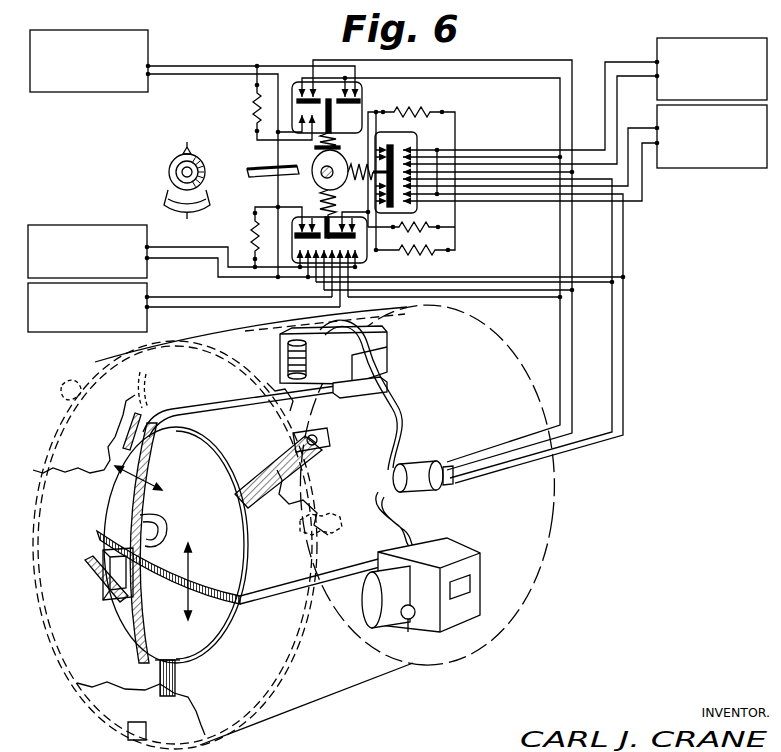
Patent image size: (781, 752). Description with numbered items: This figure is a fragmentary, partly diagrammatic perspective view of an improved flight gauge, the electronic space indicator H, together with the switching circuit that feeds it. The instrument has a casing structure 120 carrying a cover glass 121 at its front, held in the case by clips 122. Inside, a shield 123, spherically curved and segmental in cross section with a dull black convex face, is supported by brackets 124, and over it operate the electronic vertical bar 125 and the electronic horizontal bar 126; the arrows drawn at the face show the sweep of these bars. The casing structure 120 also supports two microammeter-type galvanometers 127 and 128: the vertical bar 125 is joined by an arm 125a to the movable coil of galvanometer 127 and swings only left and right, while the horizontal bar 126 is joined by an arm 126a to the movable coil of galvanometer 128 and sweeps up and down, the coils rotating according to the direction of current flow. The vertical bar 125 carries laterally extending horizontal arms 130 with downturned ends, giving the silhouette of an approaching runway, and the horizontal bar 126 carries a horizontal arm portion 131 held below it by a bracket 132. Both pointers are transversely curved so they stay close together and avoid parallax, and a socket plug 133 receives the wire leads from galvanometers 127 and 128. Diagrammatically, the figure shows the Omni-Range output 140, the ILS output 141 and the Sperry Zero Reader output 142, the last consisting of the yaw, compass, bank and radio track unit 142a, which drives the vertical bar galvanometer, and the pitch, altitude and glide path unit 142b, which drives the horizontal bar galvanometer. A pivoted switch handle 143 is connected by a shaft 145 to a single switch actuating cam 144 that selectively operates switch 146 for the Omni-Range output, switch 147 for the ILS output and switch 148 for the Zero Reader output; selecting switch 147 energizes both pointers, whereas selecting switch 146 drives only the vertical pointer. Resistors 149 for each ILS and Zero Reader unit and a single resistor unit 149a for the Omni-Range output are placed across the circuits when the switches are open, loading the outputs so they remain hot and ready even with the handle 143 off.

The Omni-Range output 140 is at (89, 49).
The ILS output 141 is at (694, 103).
The Sperry Zero Reader output 142 is at (102, 272).
The yaw, compass, bank and radio track unit 142a is at (87, 240).
The pitch, altitude and glide path unit 142b is at (87, 319).
The pivoted switch handle 143 is at (185, 181).
The switch actuating cam 144 is at (332, 175).
The shaft 145 is at (268, 163).
The switch 146 is at (349, 107).
The switch 147 is at (442, 178).
The switch 148 is at (356, 246).
The resistors 149 is at (356, 173).
The resistor unit 149a is at (239, 108).
The casing structure 120 is at (320, 527).
The cover glass 121 is at (160, 383).
The clips 122 is at (186, 457).
The shield 123 is at (179, 545).
The brackets 124 is at (226, 541).
The electronic vertical bar 125 is at (162, 543).
The arm 125a is at (246, 409).
The electronic horizontal bar 126 is at (168, 567).
The arm 126a is at (327, 591).
The galvanometer 127 is at (353, 362).
The galvanometer 128 is at (435, 585).
The horizontal arms 130 is at (167, 524).
The horizontal arm portion 131 is at (91, 583).
The bracket 132 is at (91, 569).
The socket plug 133 is at (423, 463).
The electronic space indicator H is at (491, 592).